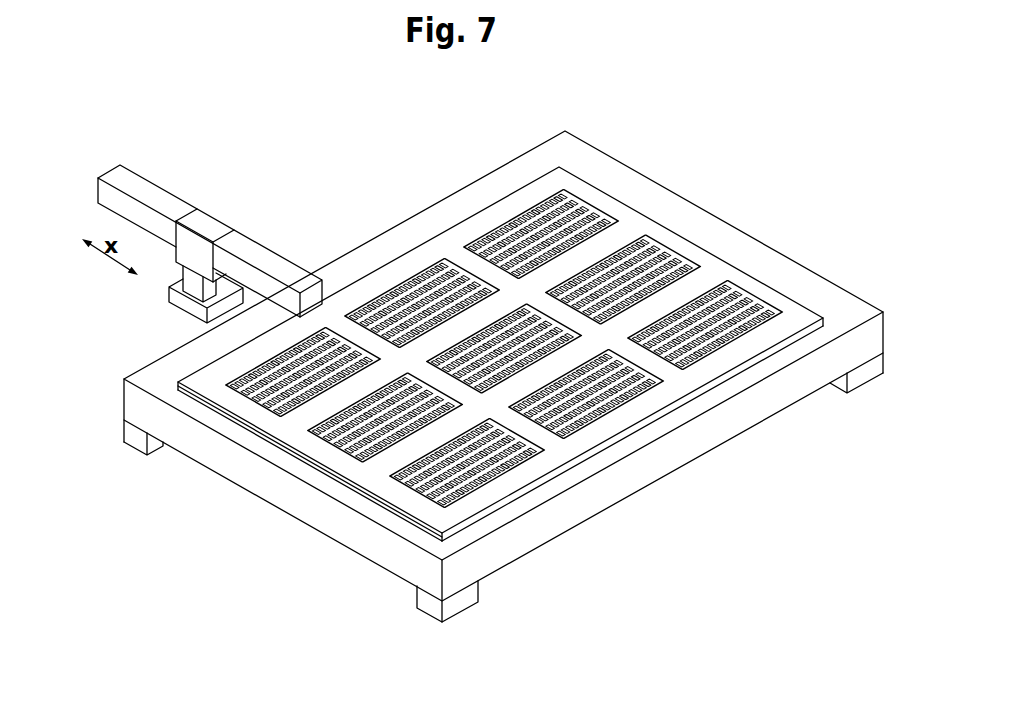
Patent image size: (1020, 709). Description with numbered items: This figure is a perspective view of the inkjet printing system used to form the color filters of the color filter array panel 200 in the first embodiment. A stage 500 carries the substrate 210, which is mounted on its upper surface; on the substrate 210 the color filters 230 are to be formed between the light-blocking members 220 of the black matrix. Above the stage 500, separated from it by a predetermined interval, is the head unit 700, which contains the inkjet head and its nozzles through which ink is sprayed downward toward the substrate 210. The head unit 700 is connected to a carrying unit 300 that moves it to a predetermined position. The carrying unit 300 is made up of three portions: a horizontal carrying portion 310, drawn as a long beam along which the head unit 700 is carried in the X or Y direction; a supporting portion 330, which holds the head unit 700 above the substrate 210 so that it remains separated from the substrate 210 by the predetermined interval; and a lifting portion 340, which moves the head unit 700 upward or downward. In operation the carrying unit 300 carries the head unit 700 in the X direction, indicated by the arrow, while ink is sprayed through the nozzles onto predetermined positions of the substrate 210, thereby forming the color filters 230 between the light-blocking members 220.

The color filter array panel 200 is at (172, 390).
The substrate 210 is at (205, 392).
The light-blocking members 220 is at (215, 394).
The color filters 230 is at (255, 405).
The carrying unit 300 is at (210, 226).
The horizontal carrying portion 310 is at (167, 192).
The supporting portion 330 is at (215, 210).
The lifting portion 340 is at (239, 251).
The stage 500 is at (749, 237).
The head unit 700 is at (170, 292).